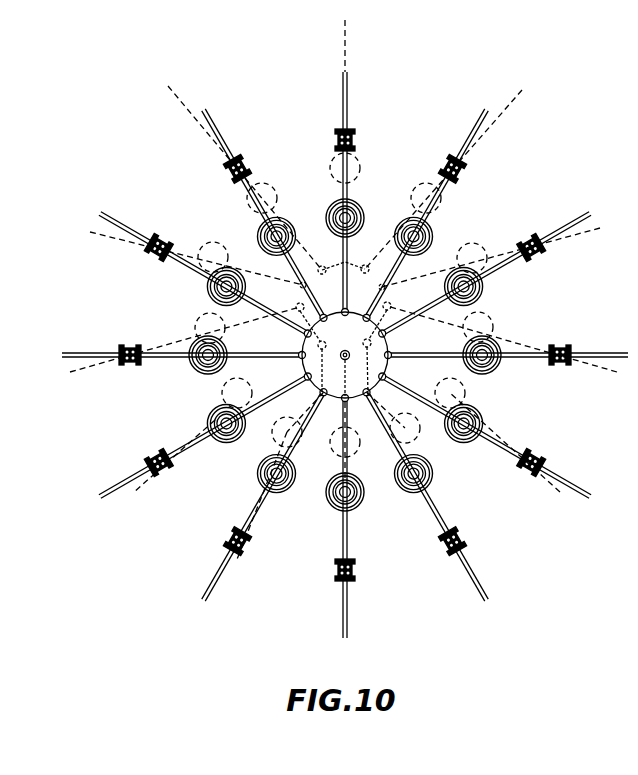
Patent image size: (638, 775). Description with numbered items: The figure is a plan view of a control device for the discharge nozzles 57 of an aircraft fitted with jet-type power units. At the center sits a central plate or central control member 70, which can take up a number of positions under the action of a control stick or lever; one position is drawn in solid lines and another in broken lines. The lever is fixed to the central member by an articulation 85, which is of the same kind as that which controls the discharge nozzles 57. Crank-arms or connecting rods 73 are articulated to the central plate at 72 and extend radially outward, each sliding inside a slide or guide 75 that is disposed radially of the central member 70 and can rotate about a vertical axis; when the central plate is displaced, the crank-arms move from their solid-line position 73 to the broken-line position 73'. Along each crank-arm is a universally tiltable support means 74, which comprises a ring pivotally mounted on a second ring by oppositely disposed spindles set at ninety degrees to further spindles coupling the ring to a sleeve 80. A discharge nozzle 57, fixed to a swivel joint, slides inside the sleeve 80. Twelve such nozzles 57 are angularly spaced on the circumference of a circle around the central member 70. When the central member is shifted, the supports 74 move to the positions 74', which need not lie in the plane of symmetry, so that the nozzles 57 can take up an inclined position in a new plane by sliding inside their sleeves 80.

The discharge nozzle 57 is at (333, 206).
The central control member 70 is at (366, 265).
The articulation on central plate 72 is at (303, 378).
The crank-arm 73 is at (335, 326).
The crank-arm in shifted position 73' is at (353, 256).
The universally tiltable support means 74 is at (345, 355).
The support means in shifted position 74' is at (354, 300).
The slide or guide 75 is at (248, 162).
The sleeve 80 is at (327, 222).
The articulation 85 is at (342, 359).